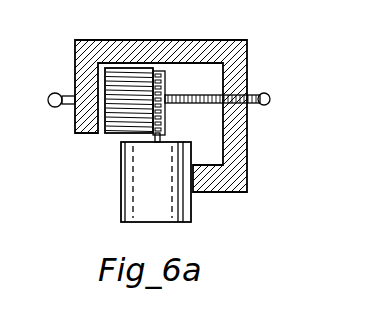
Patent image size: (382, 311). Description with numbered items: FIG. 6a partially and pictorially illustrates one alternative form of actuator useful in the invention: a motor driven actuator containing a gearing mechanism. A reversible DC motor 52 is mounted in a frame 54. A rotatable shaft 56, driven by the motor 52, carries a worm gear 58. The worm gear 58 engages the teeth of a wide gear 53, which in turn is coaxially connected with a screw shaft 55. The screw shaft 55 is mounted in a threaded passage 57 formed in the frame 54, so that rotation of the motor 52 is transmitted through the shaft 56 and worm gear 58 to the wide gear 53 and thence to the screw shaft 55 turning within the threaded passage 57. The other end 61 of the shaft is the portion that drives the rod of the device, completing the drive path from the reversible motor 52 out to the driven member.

The reversible DC motor 52 is at (143, 193).
The wide gear 53 is at (130, 82).
The frame 54 is at (247, 160).
The screw shaft 55 is at (186, 104).
The rotatable shaft 56 is at (123, 140).
The threaded passage 57 is at (263, 92).
The worm gear 58 is at (167, 87).
The other end of the shaft 61 is at (50, 105).